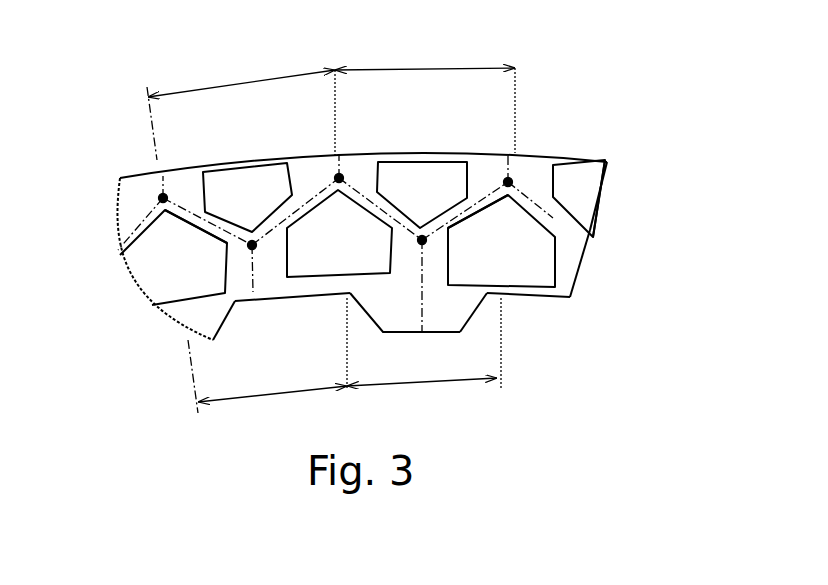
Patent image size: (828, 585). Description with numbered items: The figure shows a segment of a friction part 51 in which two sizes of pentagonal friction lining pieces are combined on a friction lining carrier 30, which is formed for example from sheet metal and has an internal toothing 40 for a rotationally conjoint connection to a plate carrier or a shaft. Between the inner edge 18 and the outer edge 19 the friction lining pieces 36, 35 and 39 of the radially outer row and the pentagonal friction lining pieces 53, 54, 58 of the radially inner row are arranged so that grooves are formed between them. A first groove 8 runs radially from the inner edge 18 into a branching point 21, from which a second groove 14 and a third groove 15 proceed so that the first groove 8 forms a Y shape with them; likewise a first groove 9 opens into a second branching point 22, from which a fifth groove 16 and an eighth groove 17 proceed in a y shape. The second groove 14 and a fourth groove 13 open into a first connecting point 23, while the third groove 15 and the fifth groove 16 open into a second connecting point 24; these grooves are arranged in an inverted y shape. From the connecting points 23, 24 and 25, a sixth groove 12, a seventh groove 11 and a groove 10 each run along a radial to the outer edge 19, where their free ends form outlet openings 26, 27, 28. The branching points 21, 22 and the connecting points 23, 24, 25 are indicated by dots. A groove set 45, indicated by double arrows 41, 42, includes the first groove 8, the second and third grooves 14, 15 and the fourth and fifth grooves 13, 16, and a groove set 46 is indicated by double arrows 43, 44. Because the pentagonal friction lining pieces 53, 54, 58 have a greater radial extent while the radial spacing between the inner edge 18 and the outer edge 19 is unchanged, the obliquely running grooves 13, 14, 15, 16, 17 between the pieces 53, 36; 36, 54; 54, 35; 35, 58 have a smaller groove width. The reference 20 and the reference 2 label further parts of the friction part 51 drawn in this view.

The friction lining carrier 2 is at (574, 181).
The first groove 8 is at (254, 282).
The first groove 9 is at (425, 310).
The groove 10 is at (510, 178).
The seventh groove 11 is at (343, 167).
The sixth groove 12 is at (164, 192).
The fourth groove 13 is at (130, 232).
The second groove 14 is at (225, 230).
The third groove 15 is at (276, 258).
The fifth groove 16 is at (407, 167).
The eighth groove 17 is at (440, 230).
The inner edge 18 is at (568, 307).
The outer edge 19 is at (630, 158).
The outer contour 20 is at (138, 262).
The branching point 21 is at (254, 278).
The second branching point 22 is at (417, 255).
The first connecting point 23 is at (161, 199).
The second connecting point 24 is at (337, 174).
The connecting point 25 is at (512, 180).
The outlet opening 26 is at (153, 163).
The outlet opening 27 is at (350, 145).
The outlet opening 28 is at (521, 144).
The friction lining carrier 30 is at (568, 270).
The friction lining piece 35 is at (387, 212).
The friction lining piece 36 is at (265, 188).
The friction lining piece 39 is at (595, 198).
The internal toothing 40 is at (487, 295).
The double arrow 41 is at (257, 80).
The double arrow 42 is at (283, 388).
The double arrow 43 is at (402, 66).
The double arrow 44 is at (420, 379).
The groove set 45 is at (198, 234).
The groove set 46 is at (479, 190).
The friction part 51 is at (168, 377).
The pentagonal friction lining piece 53 is at (147, 278).
The pentagonal friction lining piece 54 is at (365, 272).
The pentagonal friction lining piece 58 is at (552, 246).